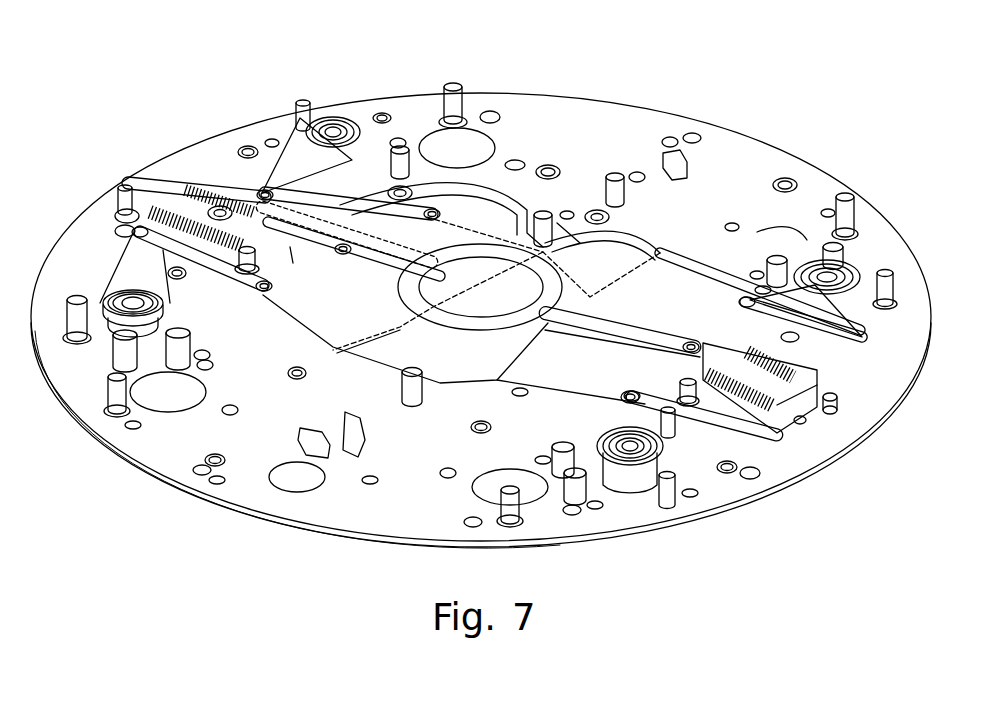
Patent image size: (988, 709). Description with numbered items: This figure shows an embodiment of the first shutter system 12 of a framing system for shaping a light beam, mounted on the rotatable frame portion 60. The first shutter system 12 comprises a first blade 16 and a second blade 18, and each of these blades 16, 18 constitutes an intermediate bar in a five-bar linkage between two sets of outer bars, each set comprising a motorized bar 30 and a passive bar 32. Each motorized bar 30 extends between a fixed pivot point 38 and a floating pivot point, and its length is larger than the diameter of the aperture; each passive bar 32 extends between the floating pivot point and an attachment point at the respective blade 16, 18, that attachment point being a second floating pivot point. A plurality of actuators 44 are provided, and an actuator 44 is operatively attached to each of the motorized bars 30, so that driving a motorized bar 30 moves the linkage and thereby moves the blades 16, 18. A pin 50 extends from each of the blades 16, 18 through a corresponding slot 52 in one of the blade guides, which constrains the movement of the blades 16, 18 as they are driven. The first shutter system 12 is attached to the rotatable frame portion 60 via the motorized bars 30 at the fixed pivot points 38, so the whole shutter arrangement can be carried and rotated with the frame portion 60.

The first shutter system 12 is at (181, 102).
The first blade 16 is at (328, 293).
The second blade 18 is at (600, 365).
The motorized bar 30 is at (690, 433).
The passive bar 32 is at (723, 417).
The fixed pivot point 38 is at (630, 450).
The actuator 44 is at (118, 330).
The pin 50 is at (343, 247).
The slot 52 is at (565, 308).
The rotatable frame portion 60 is at (808, 195).